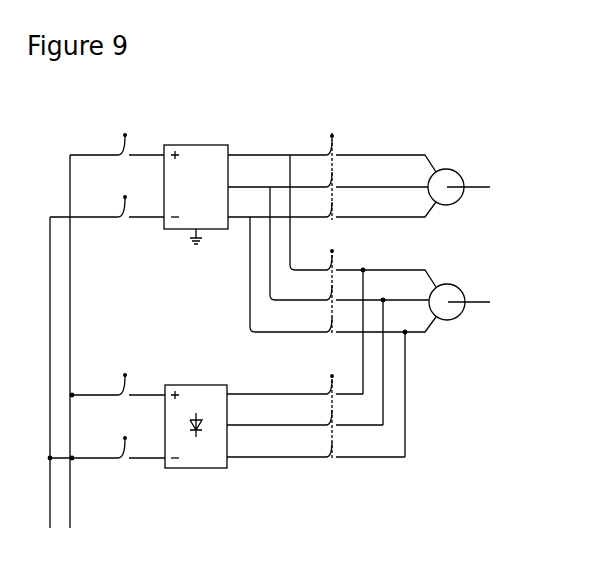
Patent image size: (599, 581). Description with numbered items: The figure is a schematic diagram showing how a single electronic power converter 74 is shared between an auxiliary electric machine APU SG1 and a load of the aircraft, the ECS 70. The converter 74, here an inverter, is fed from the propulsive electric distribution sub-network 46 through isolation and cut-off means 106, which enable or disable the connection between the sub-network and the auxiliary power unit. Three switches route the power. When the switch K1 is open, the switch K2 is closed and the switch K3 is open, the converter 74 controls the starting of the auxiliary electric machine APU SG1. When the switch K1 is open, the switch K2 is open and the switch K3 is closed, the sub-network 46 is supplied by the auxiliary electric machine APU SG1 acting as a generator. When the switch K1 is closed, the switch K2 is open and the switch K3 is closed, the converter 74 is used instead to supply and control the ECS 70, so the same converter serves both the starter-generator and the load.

The second propulsive electric distribution sub-network 46 is at (80, 497).
The isolation and cut-off means 106 is at (128, 140).
The electronic DC/AC power converter 74 is at (195, 142).
The switch K1 is at (336, 143).
The ECS load 70 is at (452, 168).
The switch K2 is at (340, 267).
The auxiliary electric machine APU SG1 is at (457, 285).
The switch K3 is at (326, 388).